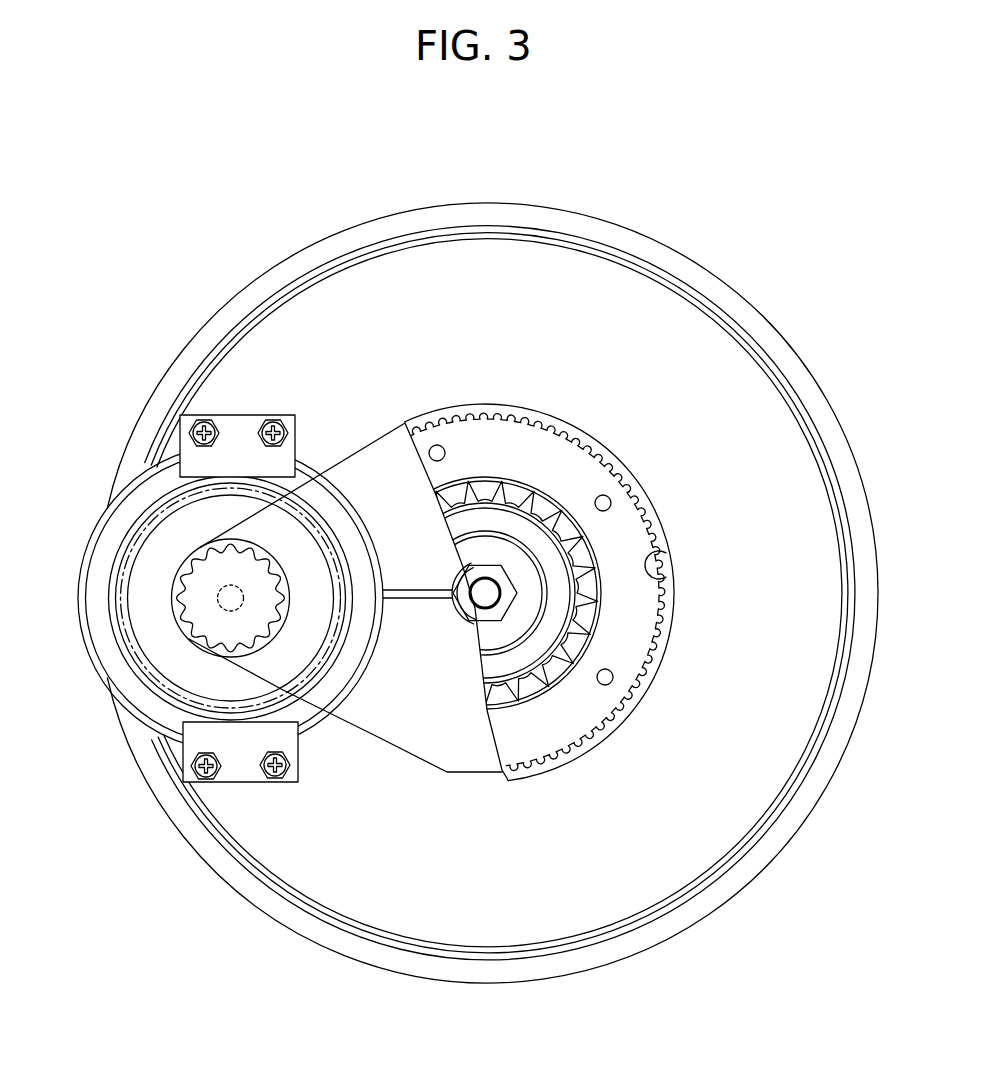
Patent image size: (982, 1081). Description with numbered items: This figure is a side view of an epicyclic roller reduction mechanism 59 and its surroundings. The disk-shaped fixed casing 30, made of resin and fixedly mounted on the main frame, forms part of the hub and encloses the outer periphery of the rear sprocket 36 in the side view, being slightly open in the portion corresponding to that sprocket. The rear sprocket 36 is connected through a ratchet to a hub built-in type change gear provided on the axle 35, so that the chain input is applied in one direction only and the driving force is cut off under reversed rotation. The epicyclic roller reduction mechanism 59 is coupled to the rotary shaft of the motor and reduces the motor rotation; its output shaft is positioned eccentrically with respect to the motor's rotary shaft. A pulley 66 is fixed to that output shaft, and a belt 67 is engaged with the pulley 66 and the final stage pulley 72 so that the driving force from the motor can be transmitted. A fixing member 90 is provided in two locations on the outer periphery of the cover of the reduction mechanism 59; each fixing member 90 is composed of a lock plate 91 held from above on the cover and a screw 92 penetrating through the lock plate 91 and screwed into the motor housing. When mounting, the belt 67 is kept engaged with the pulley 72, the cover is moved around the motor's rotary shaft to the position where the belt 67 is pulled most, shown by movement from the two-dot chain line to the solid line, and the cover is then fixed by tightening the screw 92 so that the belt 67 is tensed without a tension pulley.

The fixed casing 30 is at (742, 889).
The axle 35 is at (483, 598).
The rear sprocket 36 is at (557, 510).
The epicyclic roller reduction mechanism 59 is at (158, 540).
The pulley 66 is at (189, 639).
The belt 67 is at (422, 770).
The final stage pulley 72 is at (674, 577).
The fixing member 90 is at (233, 603).
The lock plate 91 is at (248, 430).
The screw 92 is at (193, 428).